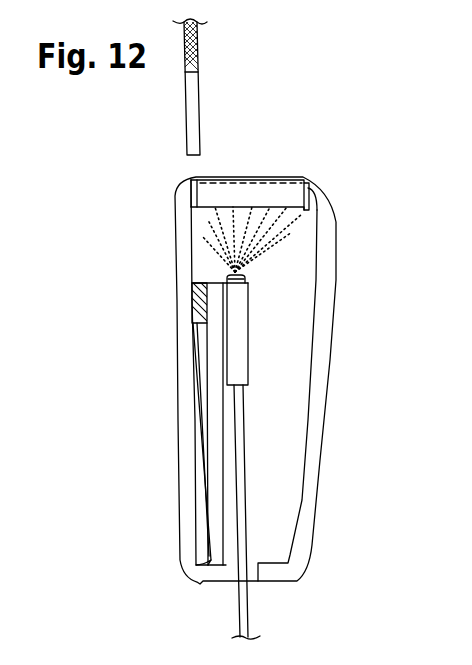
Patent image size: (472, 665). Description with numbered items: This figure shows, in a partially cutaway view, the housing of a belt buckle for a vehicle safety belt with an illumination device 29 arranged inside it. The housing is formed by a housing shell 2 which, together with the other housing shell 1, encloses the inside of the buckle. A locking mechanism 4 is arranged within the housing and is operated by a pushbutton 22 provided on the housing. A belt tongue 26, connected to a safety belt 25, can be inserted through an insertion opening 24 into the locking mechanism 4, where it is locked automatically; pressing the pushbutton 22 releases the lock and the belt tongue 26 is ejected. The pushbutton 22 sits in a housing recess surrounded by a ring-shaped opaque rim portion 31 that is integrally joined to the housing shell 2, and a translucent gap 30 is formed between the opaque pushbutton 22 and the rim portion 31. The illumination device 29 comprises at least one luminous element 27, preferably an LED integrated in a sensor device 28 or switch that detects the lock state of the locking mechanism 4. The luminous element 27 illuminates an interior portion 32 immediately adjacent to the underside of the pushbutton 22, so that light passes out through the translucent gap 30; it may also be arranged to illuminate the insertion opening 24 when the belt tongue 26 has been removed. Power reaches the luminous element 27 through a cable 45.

The housing shell 1 is at (183, 366).
The housing shell 2 is at (322, 357).
The locking mechanism 4 is at (215, 461).
The pushbutton 22 is at (268, 193).
The insertion opening 24 is at (190, 178).
The safety belt 25 is at (198, 50).
The belt tongue 26 is at (197, 110).
The luminous element 27 is at (247, 280).
The sensor device 28 is at (242, 367).
The illumination device 29 is at (268, 263).
The translucent gap 30 is at (308, 185).
The rim portion 31 is at (325, 198).
The interior portion 32 is at (268, 229).
The cable 45 is at (242, 451).